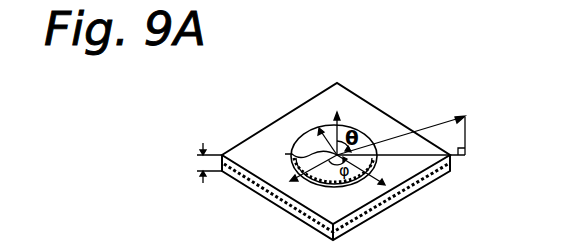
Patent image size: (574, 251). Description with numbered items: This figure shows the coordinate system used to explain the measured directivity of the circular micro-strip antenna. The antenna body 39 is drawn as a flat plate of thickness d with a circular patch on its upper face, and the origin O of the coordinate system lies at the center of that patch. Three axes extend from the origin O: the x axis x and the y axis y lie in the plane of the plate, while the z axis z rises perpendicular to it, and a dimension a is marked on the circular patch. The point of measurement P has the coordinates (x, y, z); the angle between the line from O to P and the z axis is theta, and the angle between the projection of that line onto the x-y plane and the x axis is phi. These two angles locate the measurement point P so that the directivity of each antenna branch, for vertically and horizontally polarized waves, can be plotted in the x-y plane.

The substrate plate 39 is at (256, 136).
The plate thickness d is at (204, 163).
The origin of the coordinate system O is at (322, 156).
The x coordinate x is at (307, 172).
The y coordinate y is at (366, 170).
The z coordinate z is at (335, 124).
The hemisphere radius a is at (321, 140).
The point of measurement P is at (412, 138).